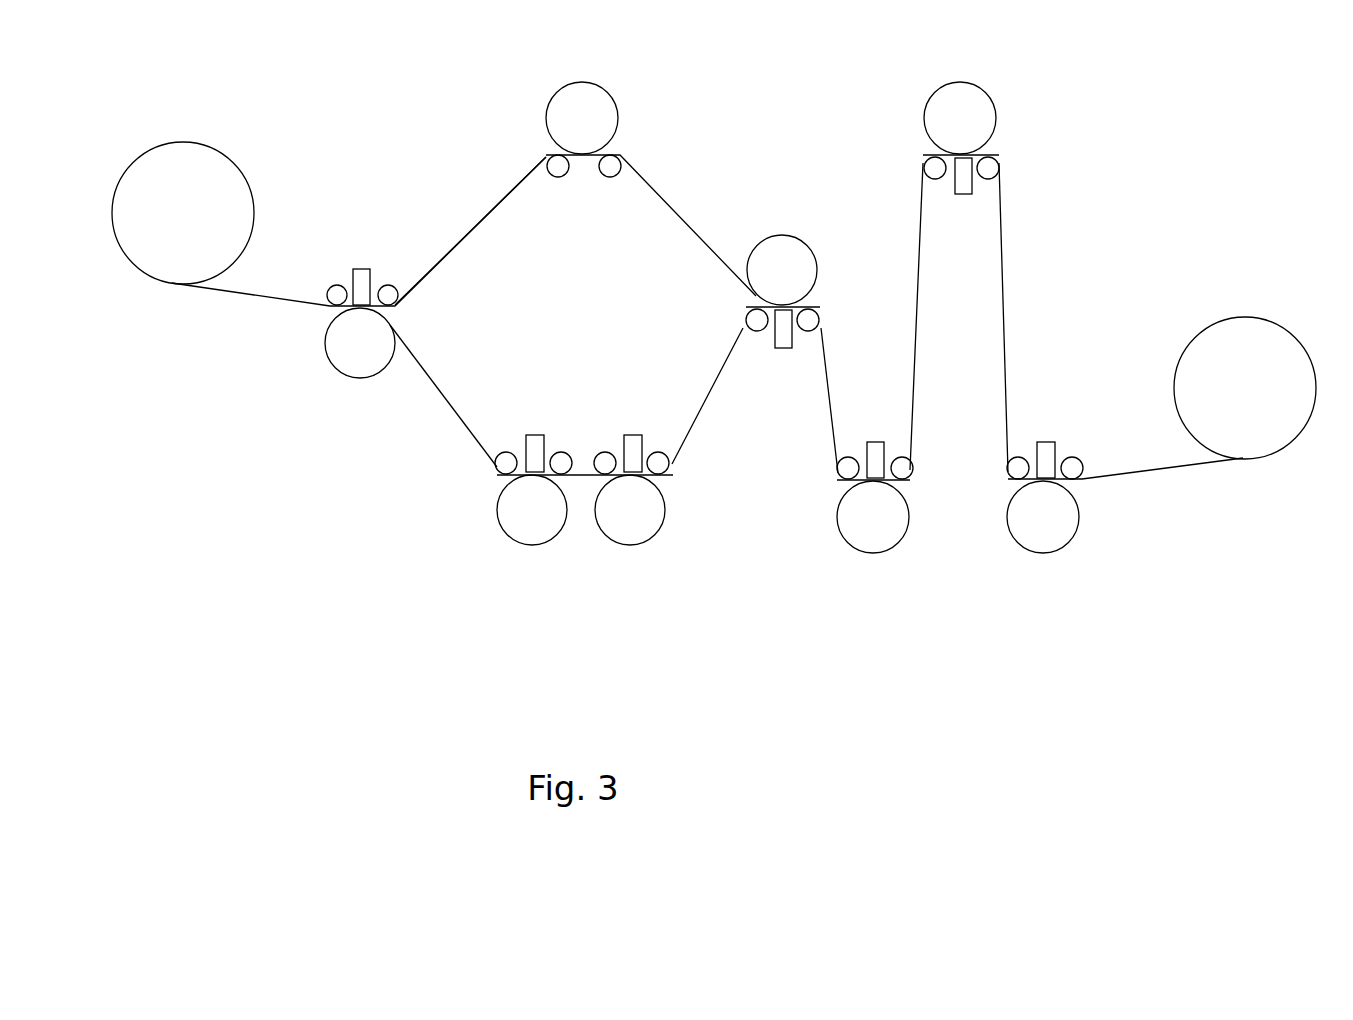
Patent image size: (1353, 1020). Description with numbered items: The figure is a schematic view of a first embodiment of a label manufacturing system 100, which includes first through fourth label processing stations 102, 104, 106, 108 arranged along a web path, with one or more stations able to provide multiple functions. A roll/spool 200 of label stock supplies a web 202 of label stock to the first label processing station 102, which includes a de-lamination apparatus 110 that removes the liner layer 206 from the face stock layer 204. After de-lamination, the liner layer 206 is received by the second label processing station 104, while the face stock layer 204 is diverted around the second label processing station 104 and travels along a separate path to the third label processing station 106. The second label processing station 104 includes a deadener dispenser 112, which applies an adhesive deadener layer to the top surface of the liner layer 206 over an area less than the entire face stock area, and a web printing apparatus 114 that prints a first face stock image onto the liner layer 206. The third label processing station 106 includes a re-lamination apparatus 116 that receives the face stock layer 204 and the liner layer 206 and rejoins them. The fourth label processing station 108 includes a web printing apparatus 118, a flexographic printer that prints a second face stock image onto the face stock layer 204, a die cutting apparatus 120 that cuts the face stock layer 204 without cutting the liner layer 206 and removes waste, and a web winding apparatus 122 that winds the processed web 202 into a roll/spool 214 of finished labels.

The label manufacturing system 100 is at (372, 682).
The first label processing station 102 is at (333, 334).
The second label processing station 104 is at (596, 507).
The third label processing station 106 is at (763, 277).
The fourth label processing station 108 is at (969, 383).
The de-lamination apparatus 110 is at (360, 268).
The deadener dispenser 112 is at (535, 435).
The web printing apparatus 114 is at (632, 435).
The re-lamination apparatus 116 is at (788, 348).
The web printing apparatus 118 is at (882, 440).
The die cutting apparatus 120 is at (960, 195).
The web winding apparatus 122 is at (1040, 442).
The roll/spool of label stock 200 is at (130, 272).
The web of label stock 202 is at (253, 298).
The face stock layer 204 is at (498, 200).
The liner layer 206 is at (432, 370).
The roll/spool of finished labels 214 is at (1225, 315).